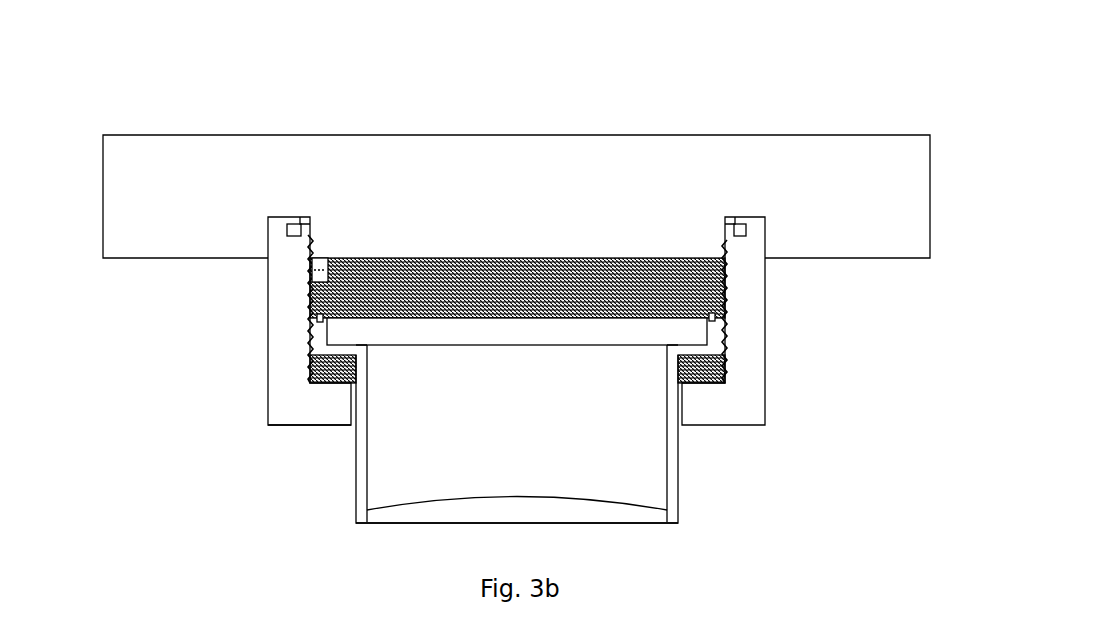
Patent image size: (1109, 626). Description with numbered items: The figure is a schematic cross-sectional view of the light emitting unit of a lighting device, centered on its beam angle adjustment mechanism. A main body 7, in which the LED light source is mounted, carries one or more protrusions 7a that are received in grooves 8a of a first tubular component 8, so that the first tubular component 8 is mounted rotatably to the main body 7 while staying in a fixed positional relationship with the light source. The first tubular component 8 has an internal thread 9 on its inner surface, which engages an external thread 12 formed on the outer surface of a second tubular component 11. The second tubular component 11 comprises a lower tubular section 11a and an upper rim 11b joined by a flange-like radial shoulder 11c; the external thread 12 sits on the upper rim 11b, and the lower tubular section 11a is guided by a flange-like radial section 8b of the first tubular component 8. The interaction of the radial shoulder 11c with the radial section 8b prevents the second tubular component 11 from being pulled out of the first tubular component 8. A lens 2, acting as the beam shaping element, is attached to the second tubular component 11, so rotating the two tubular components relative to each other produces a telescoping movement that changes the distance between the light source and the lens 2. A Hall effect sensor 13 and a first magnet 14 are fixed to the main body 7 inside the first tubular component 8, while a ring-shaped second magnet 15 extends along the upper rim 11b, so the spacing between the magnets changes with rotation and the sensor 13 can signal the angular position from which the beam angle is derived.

The lens 2 is at (407, 523).
The main body 7 is at (750, 133).
The protrusions 7a is at (303, 220).
The first tubular component 8 is at (268, 285).
The grooves 8a is at (285, 218).
The radial section 8b is at (292, 427).
The internal thread 9 is at (310, 332).
The second tubular component 11 is at (680, 487).
The lower tubular section 11a is at (673, 507).
The upper rim 11b is at (713, 330).
The radial shoulder 11c is at (727, 368).
The external thread 12 is at (727, 335).
The Hall effect sensor 13 is at (310, 278).
The first magnet 14 is at (320, 258).
The second magnet 15 is at (310, 320).